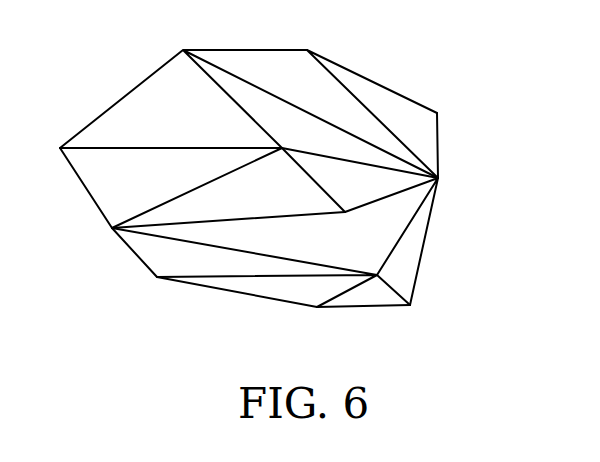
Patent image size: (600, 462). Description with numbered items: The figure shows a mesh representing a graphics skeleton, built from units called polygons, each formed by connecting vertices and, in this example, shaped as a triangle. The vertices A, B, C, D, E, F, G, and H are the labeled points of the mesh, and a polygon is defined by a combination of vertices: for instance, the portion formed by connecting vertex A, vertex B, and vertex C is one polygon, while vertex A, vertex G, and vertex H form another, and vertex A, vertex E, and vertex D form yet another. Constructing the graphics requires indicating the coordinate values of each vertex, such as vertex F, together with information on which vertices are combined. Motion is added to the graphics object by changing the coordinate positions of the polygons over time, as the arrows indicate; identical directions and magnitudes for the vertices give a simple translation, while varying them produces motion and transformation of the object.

The vertex A is at (374, 226).
The vertex B is at (438, 73).
The vertex C is at (331, 16).
The vertex D is at (376, 303).
The vertex E is at (261, 267).
The vertex F is at (234, 203).
The vertex G is at (251, 192).
The vertex H is at (226, 23).